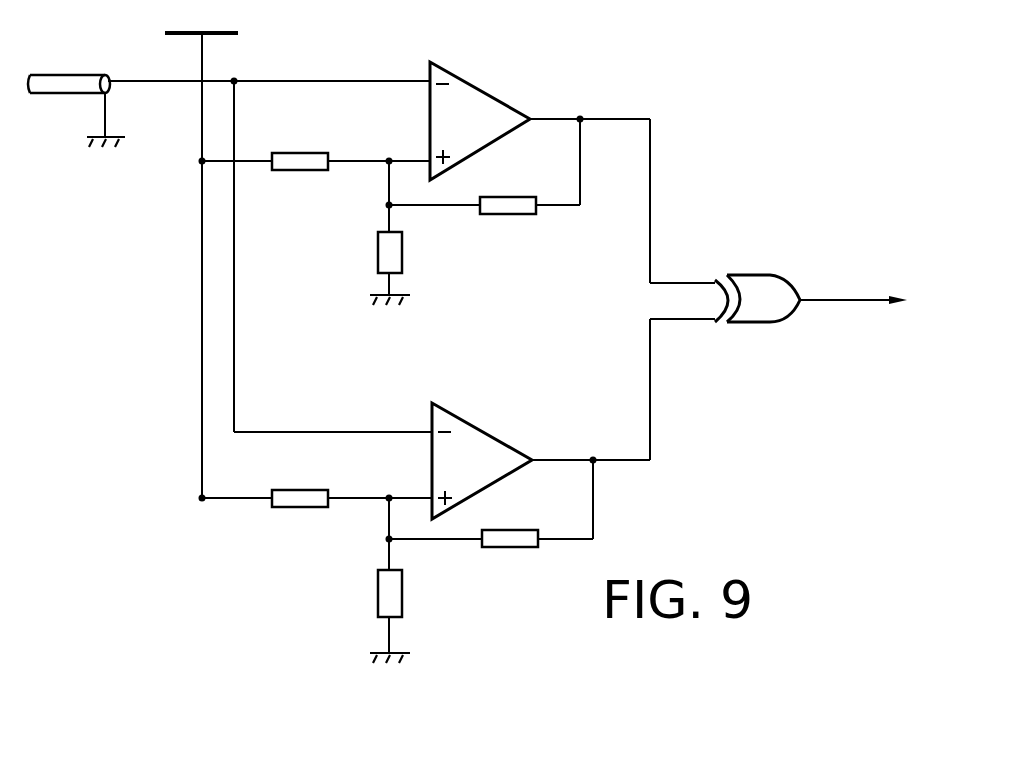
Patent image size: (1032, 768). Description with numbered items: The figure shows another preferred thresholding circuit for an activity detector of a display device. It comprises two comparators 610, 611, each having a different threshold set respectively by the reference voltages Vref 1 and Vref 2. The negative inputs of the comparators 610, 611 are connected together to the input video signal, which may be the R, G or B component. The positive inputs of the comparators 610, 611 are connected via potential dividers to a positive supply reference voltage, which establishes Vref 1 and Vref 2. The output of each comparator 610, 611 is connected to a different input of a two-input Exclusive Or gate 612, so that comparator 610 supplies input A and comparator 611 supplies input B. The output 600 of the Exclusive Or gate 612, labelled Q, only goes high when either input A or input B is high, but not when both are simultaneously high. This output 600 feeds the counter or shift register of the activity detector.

The comparator 610 is at (525, 64).
The comparator 611 is at (507, 447).
The Exclusive Or (EOR) gate 612 is at (738, 326).
The output 600 is at (838, 302).
The Vref1 1 is at (370, 190).
The Vref2 2 is at (366, 518).